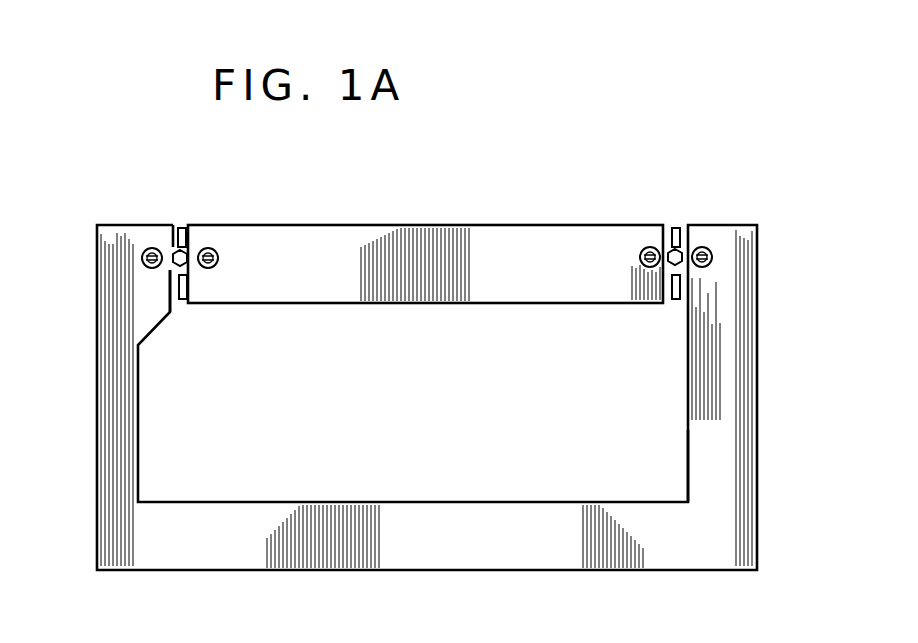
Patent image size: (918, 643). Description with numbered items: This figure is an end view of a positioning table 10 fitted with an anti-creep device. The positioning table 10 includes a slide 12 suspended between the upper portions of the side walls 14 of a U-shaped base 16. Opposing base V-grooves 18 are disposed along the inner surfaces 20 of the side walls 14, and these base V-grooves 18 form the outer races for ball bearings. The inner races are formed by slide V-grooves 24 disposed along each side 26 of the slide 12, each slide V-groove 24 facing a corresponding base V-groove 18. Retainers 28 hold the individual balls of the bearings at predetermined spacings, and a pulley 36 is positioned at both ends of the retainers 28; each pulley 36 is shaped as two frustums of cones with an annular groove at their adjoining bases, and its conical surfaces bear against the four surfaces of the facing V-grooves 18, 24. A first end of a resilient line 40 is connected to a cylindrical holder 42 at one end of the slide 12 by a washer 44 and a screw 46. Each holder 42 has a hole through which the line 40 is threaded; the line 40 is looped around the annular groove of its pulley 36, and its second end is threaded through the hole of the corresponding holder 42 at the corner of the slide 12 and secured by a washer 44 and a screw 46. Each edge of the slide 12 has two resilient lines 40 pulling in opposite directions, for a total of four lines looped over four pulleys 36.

The positioning table 10 is at (385, 190).
The slide 12 is at (531, 225).
The side walls 14 is at (758, 276).
The U-shaped base 16 is at (650, 571).
The base V-grooves 18 is at (684, 263).
The inner surfaces 20 is at (680, 340).
The slide V-grooves 24 is at (670, 268).
The side 26 is at (188, 300).
The retainers 28 is at (176, 226).
The pulley 36 is at (175, 268).
The resilient line 40 is at (239, 204).
The cylindrical holder 42 is at (217, 250).
The washer 44 is at (143, 258).
The screw 46 is at (172, 266).